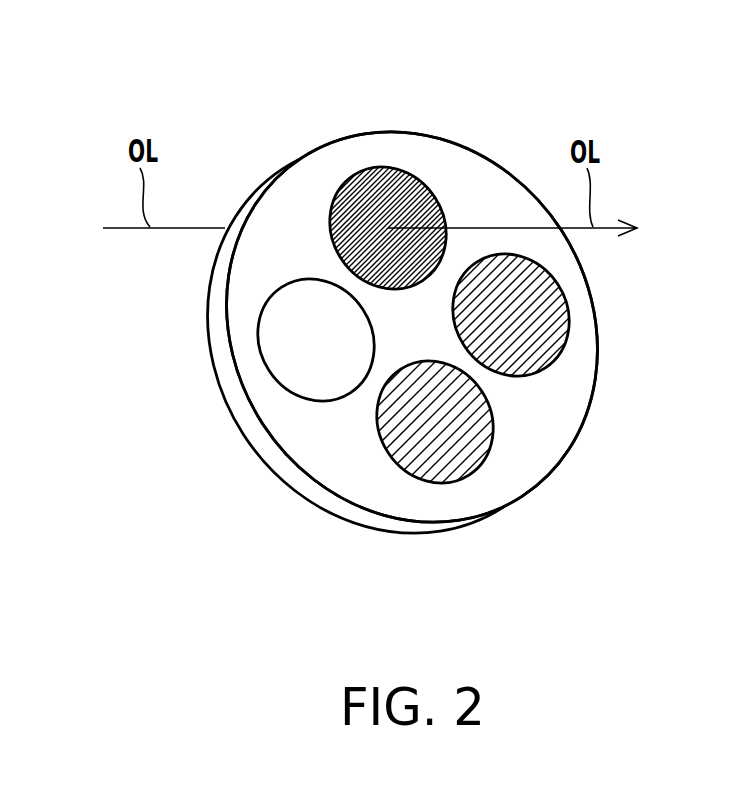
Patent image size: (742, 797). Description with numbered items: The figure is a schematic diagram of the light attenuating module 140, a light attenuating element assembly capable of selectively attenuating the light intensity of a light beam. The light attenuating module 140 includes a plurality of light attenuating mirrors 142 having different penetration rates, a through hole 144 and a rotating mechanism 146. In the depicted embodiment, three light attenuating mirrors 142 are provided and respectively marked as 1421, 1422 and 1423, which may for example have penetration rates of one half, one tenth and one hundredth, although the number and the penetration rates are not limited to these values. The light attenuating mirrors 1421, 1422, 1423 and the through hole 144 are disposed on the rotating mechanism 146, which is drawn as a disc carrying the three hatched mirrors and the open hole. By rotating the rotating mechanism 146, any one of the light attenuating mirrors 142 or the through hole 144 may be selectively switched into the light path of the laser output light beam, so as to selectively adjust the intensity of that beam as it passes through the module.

The light attenuating module 140 is at (709, 582).
The light attenuating mirrors 142 is at (371, 336).
The light attenuating mirror 1421 is at (388, 180).
The light attenuating mirror 1422 is at (550, 312).
The light attenuating mirror 1423 is at (437, 452).
The through hole 144 is at (306, 297).
The rotating mechanism 146 is at (305, 182).